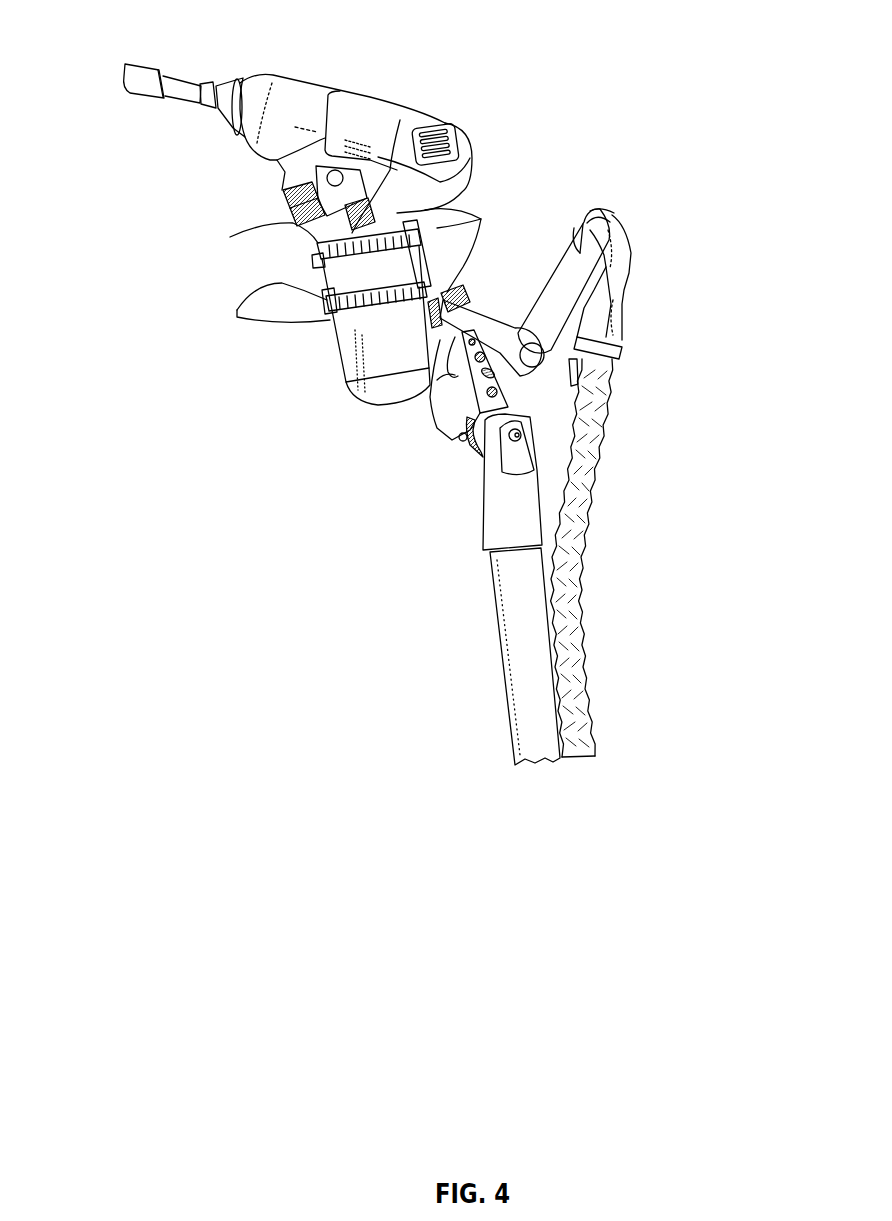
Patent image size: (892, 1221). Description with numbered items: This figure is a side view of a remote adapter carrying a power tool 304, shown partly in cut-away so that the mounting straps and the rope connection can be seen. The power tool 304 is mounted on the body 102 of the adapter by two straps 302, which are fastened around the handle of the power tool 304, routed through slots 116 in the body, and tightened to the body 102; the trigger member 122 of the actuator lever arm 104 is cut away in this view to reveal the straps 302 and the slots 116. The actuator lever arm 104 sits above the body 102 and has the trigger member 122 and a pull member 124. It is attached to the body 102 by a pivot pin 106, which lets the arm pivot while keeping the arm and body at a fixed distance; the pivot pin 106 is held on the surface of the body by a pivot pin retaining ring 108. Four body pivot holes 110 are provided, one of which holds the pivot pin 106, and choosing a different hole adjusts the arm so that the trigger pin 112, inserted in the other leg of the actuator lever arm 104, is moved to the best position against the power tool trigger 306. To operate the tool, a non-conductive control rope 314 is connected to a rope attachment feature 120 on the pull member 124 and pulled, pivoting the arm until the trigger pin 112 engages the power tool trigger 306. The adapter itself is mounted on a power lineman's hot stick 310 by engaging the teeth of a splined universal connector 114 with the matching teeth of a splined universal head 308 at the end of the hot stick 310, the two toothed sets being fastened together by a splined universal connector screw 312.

The power tool 304 is at (298, 124).
The trigger member 122 is at (416, 148).
The power tool trigger 306 is at (237, 195).
The trigger pin 112 is at (301, 263).
The straps 302 is at (334, 273).
The body 102 is at (323, 346).
The slots 116 is at (485, 279).
The actuator lever arm 104 is at (561, 281).
The pivot pin 106 is at (613, 348).
The pull member 124 is at (565, 212).
The rope attachment feature 120 is at (647, 189).
The non-conductive control rope 314 is at (648, 486).
The pivot pin retaining ring 108 is at (578, 374).
The body pivot holes 110 is at (427, 398).
The splined universal connector 114 is at (412, 469).
The splined universal head 308 is at (456, 494).
The splined universal connector screw 312 is at (603, 449).
The power lineman's hot stick 310 is at (462, 656).